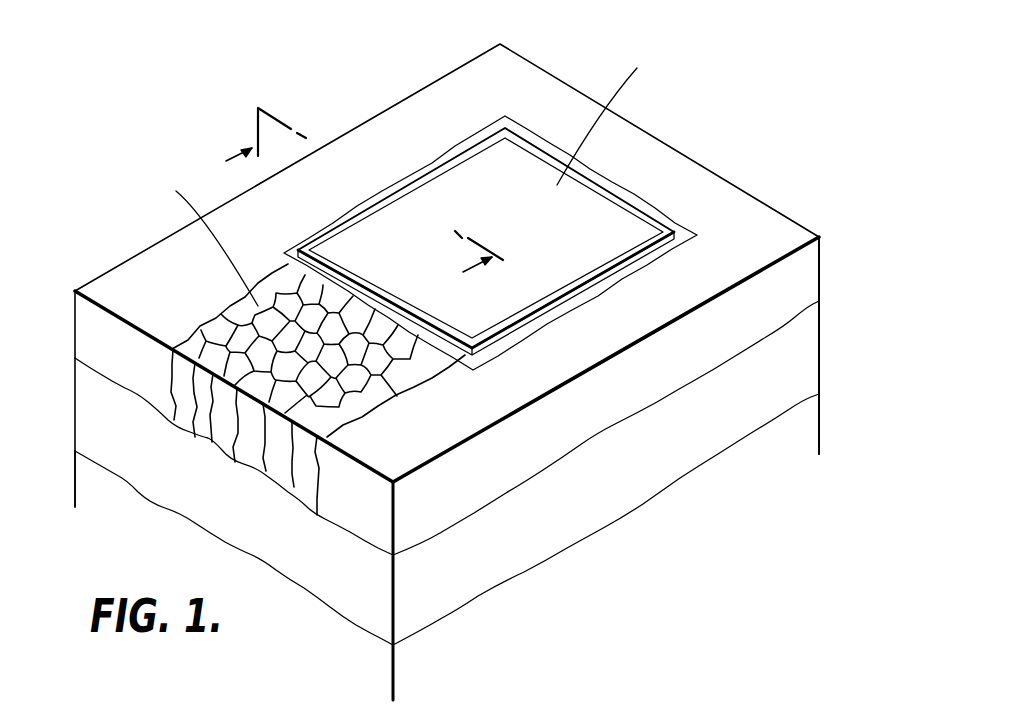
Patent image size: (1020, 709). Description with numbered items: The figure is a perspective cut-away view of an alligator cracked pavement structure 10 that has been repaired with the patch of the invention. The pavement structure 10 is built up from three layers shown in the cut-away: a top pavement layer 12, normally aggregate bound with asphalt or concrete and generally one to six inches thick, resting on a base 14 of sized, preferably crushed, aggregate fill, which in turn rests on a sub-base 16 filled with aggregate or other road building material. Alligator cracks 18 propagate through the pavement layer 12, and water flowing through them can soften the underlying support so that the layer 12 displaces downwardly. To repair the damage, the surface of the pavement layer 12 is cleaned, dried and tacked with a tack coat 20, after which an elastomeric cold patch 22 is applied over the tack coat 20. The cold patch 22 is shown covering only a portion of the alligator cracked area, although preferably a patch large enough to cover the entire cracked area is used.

The alligator cracked pavement structure 10 is at (374, 90).
The top pavement layer 12 is at (819, 282).
The base 14 is at (819, 343).
The sub-base 16 is at (819, 414).
The alligator cracks 18 is at (175, 369).
The tack coat 20 is at (668, 221).
The elastomeric cold patch 22 is at (512, 155).